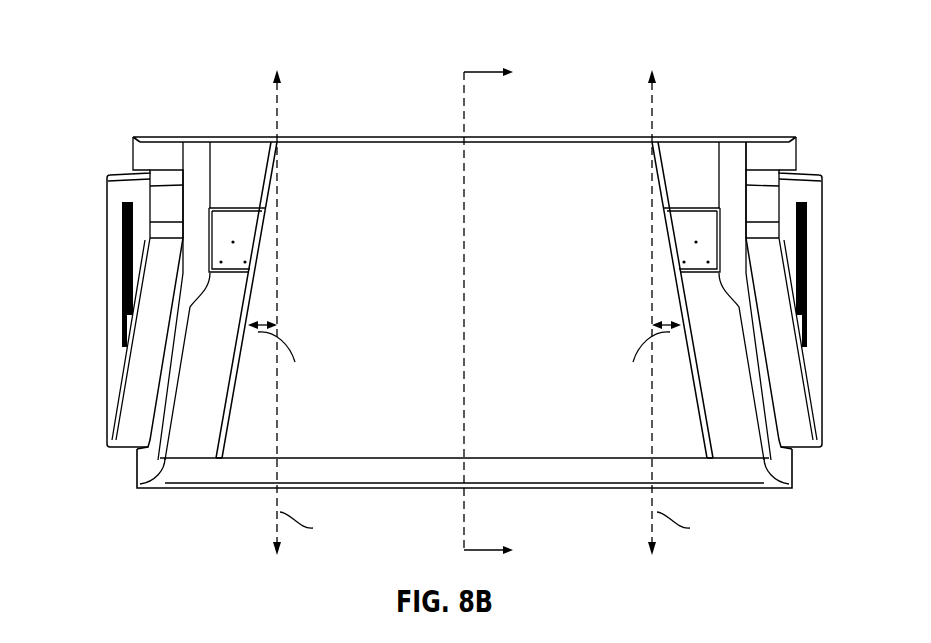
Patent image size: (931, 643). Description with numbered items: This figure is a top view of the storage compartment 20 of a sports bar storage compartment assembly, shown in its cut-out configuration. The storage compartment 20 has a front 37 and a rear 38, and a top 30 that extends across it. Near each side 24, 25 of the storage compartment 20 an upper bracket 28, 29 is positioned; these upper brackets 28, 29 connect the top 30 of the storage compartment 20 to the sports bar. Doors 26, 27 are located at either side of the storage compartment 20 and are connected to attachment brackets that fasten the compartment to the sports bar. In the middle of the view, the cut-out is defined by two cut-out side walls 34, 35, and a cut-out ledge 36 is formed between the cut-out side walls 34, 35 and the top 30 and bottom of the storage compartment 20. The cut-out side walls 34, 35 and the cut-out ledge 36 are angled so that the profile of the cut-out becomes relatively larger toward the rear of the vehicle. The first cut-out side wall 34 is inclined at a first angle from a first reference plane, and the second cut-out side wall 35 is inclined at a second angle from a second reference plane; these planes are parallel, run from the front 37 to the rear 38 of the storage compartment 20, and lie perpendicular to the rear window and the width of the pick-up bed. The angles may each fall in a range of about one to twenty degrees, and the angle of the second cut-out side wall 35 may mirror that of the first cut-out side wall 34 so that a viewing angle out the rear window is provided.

The storage compartment 20 is at (164, 36).
The side of the storage compartment 24 is at (143, 150).
The side of the storage compartment 25 is at (770, 152).
The door 26 is at (113, 188).
The door 27 is at (814, 188).
The upper bracket 28 is at (245, 229).
The upper bracket 29 is at (682, 228).
The top of the storage compartment 30 is at (682, 153).
The first cut-out side wall 34 is at (233, 400).
The second cut-out side wall 35 is at (694, 400).
The cut-out ledge 36 is at (452, 327).
The front of the storage compartment 37 is at (507, 137).
The rear of the storage compartment 38 is at (515, 488).